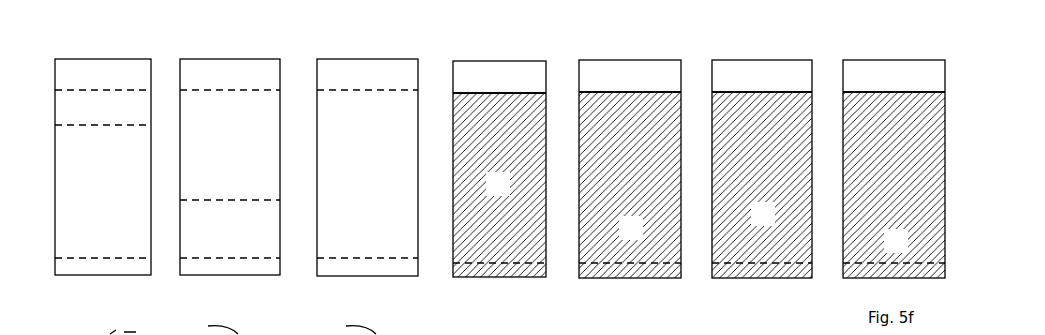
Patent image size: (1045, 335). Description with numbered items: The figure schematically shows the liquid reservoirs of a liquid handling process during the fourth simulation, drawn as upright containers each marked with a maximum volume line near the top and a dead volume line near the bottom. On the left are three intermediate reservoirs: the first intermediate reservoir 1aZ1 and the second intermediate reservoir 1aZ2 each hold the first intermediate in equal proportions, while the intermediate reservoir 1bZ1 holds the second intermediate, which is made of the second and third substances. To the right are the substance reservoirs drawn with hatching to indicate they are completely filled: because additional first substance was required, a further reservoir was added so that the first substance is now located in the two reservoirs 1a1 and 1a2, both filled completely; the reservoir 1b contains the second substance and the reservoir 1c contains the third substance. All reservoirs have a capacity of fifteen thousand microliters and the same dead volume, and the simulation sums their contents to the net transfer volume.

The intermediate reservoir 1aZ1 is at (110, 14).
The intermediate reservoir 1aZ2 is at (214, 46).
The intermediate reservoir 1bZ1 is at (350, 46).
The reservoir 1a1 is at (452, 62).
The reservoir 1a2 is at (578, 59).
The reservoir 1b is at (711, 59).
The reservoir 1c is at (842, 59).